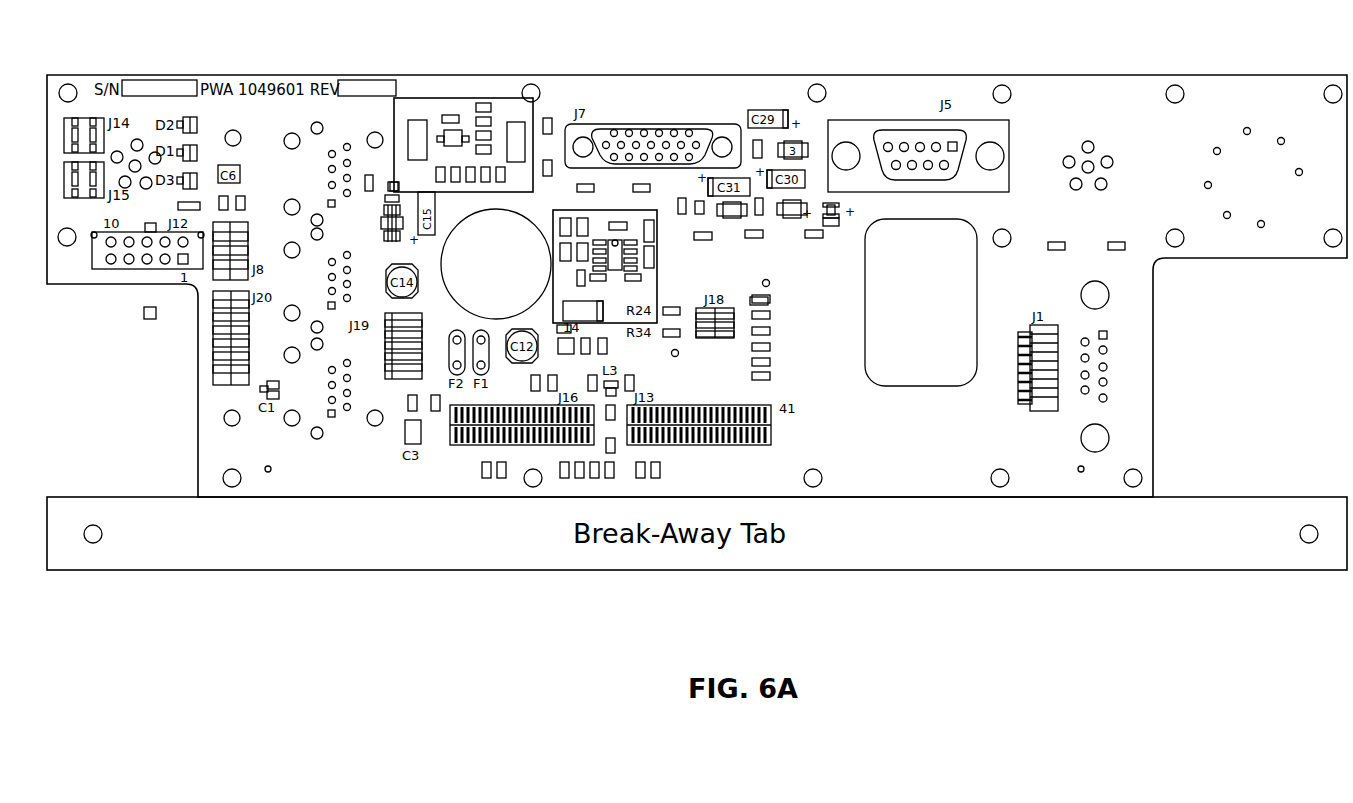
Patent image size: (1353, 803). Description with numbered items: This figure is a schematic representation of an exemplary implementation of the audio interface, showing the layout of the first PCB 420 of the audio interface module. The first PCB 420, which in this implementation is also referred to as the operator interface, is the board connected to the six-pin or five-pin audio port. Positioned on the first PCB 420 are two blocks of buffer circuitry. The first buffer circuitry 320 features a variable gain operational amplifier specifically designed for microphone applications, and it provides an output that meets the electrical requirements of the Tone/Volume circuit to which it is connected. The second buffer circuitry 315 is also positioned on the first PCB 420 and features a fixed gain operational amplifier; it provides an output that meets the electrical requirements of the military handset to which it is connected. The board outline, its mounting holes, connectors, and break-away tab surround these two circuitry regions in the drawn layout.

The second buffer circuitry 315 is at (533, 120).
The first buffer circuitry 320 is at (650, 262).
The first PCB 420 is at (1144, 89).